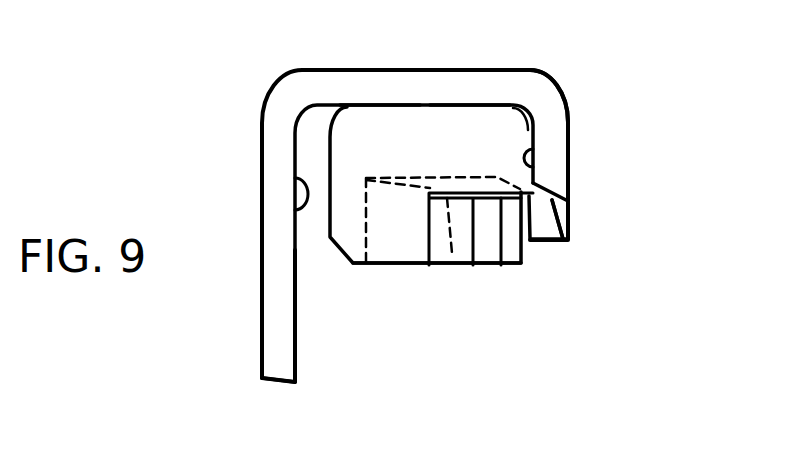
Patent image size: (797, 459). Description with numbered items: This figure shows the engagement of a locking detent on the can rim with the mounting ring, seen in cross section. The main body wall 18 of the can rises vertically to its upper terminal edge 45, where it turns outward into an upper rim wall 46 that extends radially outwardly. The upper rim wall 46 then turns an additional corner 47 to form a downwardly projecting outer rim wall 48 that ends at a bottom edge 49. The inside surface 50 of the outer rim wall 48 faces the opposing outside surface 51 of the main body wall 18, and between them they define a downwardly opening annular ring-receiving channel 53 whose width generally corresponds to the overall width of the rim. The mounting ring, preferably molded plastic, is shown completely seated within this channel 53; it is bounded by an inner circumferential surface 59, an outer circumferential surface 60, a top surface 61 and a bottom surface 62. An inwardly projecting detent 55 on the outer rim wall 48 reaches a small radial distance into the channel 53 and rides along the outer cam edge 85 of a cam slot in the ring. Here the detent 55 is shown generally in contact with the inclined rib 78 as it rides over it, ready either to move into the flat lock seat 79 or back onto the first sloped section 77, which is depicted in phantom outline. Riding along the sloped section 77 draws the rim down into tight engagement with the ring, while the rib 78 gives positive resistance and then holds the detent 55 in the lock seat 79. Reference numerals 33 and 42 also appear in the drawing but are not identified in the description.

The main body wall 18 is at (280, 337).
The panel 33 is at (143, 11).
The cavity 42 is at (477, 118).
The upper terminal edge 45 is at (283, 77).
The upper rim wall 46 is at (425, 70).
The corner 47 is at (548, 80).
The outer rim wall 48 is at (565, 138).
The bottom edge 49 is at (547, 243).
The inside surface 50 is at (533, 157).
The outside surface 51 is at (295, 210).
The ring-receiving channel 53 is at (344, 311).
The detent 55 is at (572, 223).
The inner circumferential surface 59 is at (330, 158).
The outer circumferential surface 60 is at (534, 138).
The top surface 61 is at (373, 105).
The bottom surface 62 is at (407, 263).
The first sloped section 77 is at (453, 258).
The inclined rib 78 is at (474, 265).
The flat lock seat 79 is at (503, 265).
The outer cam edge 85 is at (568, 201).